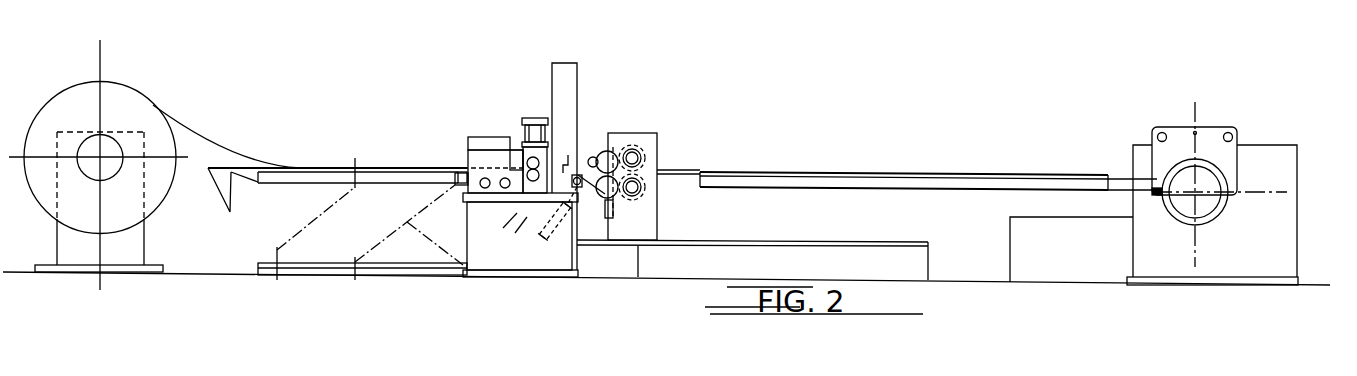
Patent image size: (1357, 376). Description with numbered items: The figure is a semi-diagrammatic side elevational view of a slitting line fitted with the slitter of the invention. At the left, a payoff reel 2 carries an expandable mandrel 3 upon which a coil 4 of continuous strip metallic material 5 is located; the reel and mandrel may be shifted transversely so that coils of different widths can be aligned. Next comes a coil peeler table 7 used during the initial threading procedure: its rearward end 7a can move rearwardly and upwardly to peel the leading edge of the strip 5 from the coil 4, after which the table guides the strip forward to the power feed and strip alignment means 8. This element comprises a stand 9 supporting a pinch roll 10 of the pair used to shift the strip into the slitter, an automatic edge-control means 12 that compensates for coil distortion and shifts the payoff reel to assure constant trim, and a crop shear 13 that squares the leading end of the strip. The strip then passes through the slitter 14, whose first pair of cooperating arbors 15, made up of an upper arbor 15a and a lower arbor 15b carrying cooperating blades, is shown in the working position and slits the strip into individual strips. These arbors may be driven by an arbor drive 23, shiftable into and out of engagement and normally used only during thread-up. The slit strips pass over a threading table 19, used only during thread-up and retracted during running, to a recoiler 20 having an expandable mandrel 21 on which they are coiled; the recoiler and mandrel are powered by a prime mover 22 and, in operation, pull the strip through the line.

The payoff reel 2 is at (137, 250).
The expandable mandrel 3 is at (113, 173).
The coil 4 is at (108, 97).
The strip 5 is at (207, 137).
The coil peeler table 7 is at (337, 219).
The rearward end of coil peeler table 7a is at (208, 170).
The power feed and strip alignment means 8 is at (518, 118).
The stand 9 is at (513, 260).
The pinch roll 10 is at (525, 158).
The automatic edge-control means 12 is at (475, 155).
The crop shear 13 is at (573, 73).
The slitter 14 is at (660, 145).
The first pair of cooperating arbors 15 is at (638, 153).
The upper arbor 15a is at (647, 158).
The lower arbor 15b is at (642, 192).
The threading table 19 is at (862, 188).
The recoiler 20 is at (1287, 222).
The expandable mandrel 21 is at (1207, 207).
The prime mover 22 is at (1030, 220).
The arbor drive 23 is at (580, 152).